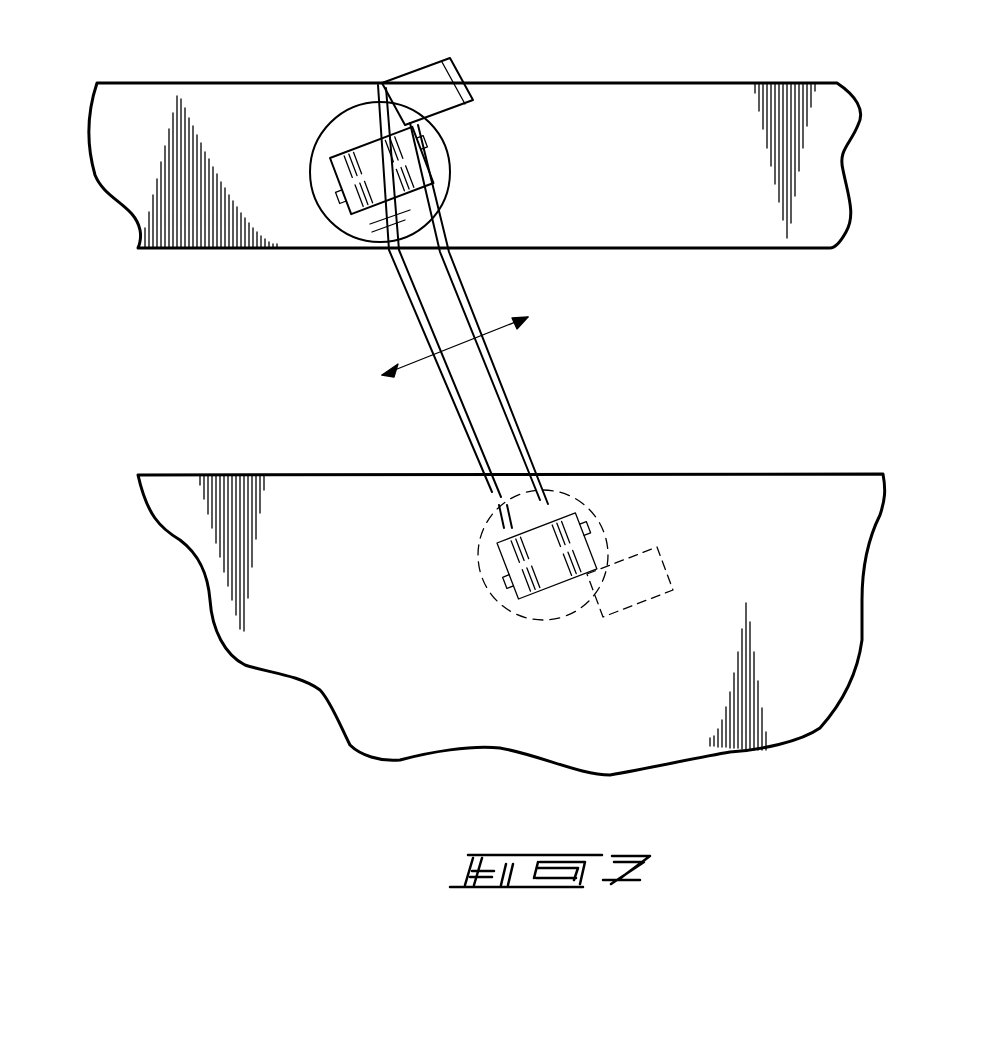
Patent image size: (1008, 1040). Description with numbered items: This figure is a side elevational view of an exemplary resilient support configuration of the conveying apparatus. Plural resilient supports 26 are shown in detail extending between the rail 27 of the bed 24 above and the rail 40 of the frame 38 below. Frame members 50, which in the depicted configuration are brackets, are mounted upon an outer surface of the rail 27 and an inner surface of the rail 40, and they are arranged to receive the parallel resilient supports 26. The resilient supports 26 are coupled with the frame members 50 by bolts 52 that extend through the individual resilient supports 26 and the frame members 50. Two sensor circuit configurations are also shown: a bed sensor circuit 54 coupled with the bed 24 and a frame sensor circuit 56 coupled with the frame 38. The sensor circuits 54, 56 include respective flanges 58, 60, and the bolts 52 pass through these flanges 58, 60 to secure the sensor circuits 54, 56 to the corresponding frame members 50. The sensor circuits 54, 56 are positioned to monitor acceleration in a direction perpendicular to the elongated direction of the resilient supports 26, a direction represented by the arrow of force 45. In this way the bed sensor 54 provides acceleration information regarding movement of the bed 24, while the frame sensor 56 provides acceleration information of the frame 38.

The bed 24 is at (88, 128).
The resilient supports 26 is at (383, 132).
The rail 27 is at (648, 128).
The frame 38 is at (208, 595).
The rail 40 is at (800, 610).
The arrow of force 45 is at (455, 348).
The frame members 50 is at (372, 152).
The bolts 52 is at (432, 151).
The sensor circuit 54 is at (452, 72).
The sensor circuit 56 is at (647, 545).
The flange 58 is at (443, 203).
The flange 60 is at (597, 580).